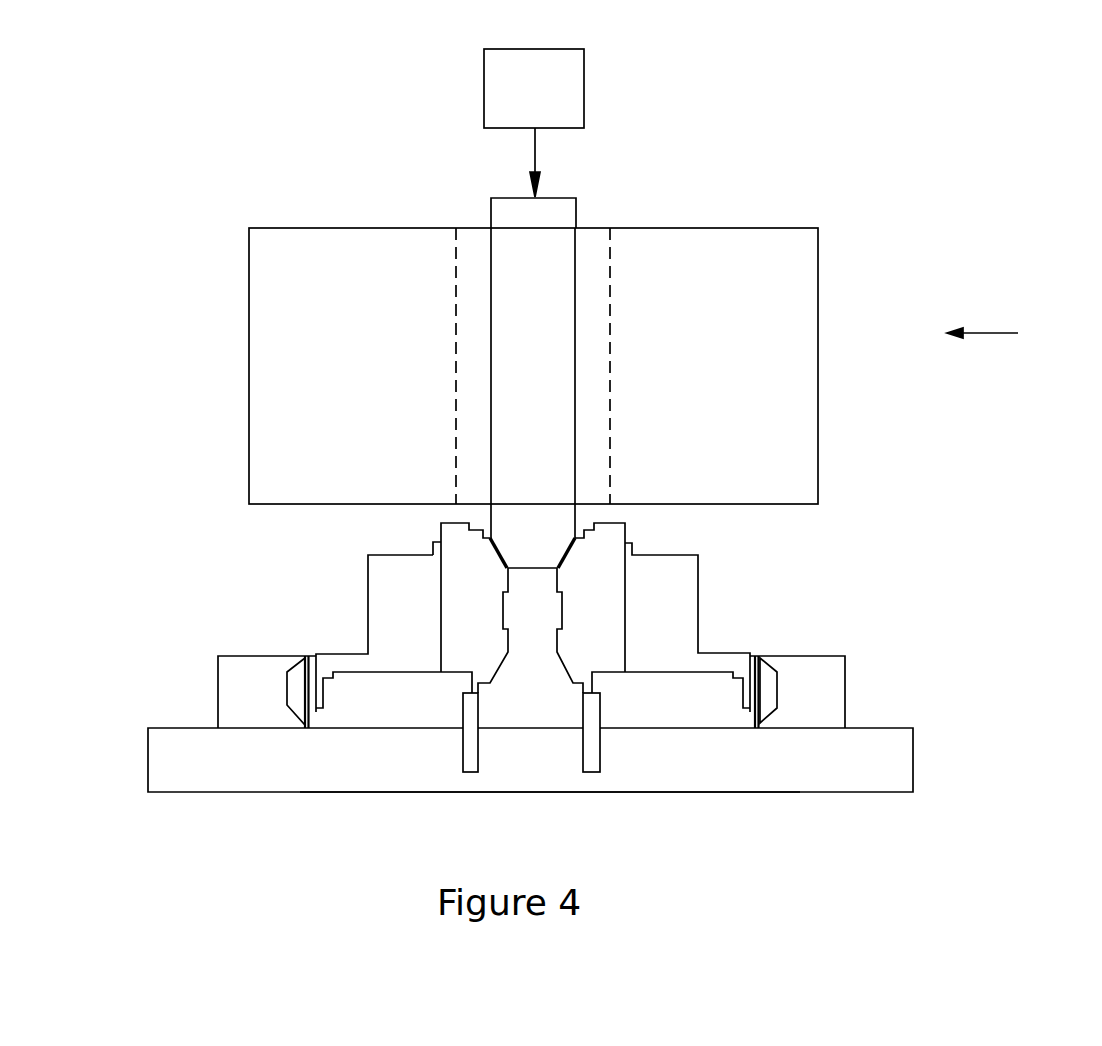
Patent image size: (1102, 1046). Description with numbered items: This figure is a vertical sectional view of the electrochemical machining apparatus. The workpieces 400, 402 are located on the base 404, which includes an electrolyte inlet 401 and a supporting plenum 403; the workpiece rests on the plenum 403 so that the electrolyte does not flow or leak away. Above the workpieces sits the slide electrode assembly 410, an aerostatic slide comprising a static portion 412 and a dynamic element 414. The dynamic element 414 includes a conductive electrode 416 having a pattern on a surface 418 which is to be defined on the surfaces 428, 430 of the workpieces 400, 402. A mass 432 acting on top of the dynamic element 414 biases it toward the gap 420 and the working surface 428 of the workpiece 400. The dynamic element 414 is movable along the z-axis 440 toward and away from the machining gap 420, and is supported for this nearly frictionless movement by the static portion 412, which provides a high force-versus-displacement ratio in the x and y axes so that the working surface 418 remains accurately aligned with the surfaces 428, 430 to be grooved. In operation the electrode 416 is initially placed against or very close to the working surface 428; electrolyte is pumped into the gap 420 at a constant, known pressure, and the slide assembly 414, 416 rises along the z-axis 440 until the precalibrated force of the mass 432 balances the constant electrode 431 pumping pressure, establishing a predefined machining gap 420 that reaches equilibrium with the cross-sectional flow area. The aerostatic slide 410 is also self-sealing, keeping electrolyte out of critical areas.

The workpiece 400 is at (687, 577).
The electrolyte inlet 401 is at (915, 747).
The workpiece 402 is at (448, 633).
The supporting plenum 403 is at (468, 712).
The base 404 is at (663, 778).
The slide electrode assembly 410 is at (1082, 357).
The static portion 412 is at (808, 430).
The dynamic element 414 is at (497, 207).
The conductive electrode 416 is at (533, 383).
The surface 418 is at (335, 597).
The gap 420 is at (495, 549).
The surface 428 is at (568, 553).
The surface 430 is at (361, 627).
The electrode 431 is at (580, 516).
The mass 432 is at (580, 83).
The z-axis 440 is at (535, 152).